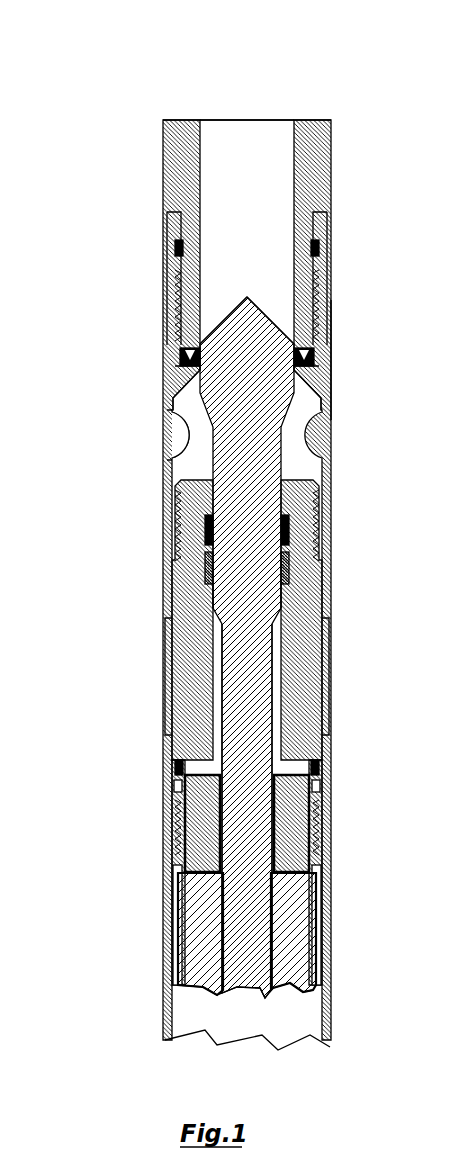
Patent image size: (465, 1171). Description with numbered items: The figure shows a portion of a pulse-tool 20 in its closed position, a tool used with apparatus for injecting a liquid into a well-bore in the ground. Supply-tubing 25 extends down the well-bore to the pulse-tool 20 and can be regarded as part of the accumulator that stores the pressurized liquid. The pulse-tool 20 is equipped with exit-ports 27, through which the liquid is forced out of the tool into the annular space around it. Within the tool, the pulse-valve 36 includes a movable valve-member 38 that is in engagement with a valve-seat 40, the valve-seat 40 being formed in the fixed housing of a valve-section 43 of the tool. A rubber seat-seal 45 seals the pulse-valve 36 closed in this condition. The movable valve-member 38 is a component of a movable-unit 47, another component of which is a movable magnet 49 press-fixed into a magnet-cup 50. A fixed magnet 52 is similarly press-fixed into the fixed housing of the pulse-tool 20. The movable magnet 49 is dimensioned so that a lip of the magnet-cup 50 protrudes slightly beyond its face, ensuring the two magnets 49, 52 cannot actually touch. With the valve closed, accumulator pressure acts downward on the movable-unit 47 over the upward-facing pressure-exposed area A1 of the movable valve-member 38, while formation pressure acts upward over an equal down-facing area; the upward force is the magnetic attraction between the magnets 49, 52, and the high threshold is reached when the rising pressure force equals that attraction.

The pulse-tool 20 is at (257, 80).
The supply-tubing 25 is at (310, 185).
The exit-ports 27 is at (172, 440).
The pulse-valve 36 is at (346, 354).
The movable valve-member 38 is at (258, 372).
The valve-seat 40 is at (190, 377).
The valve-section 43 is at (328, 518).
The seat-seal 45 is at (185, 360).
The movable-unit 47 is at (255, 740).
The movable magnet 49 is at (292, 918).
The magnet-cup 50 is at (282, 990).
The fixed magnet 52 is at (292, 828).
The pressure-exposed area A1 is at (272, 318).